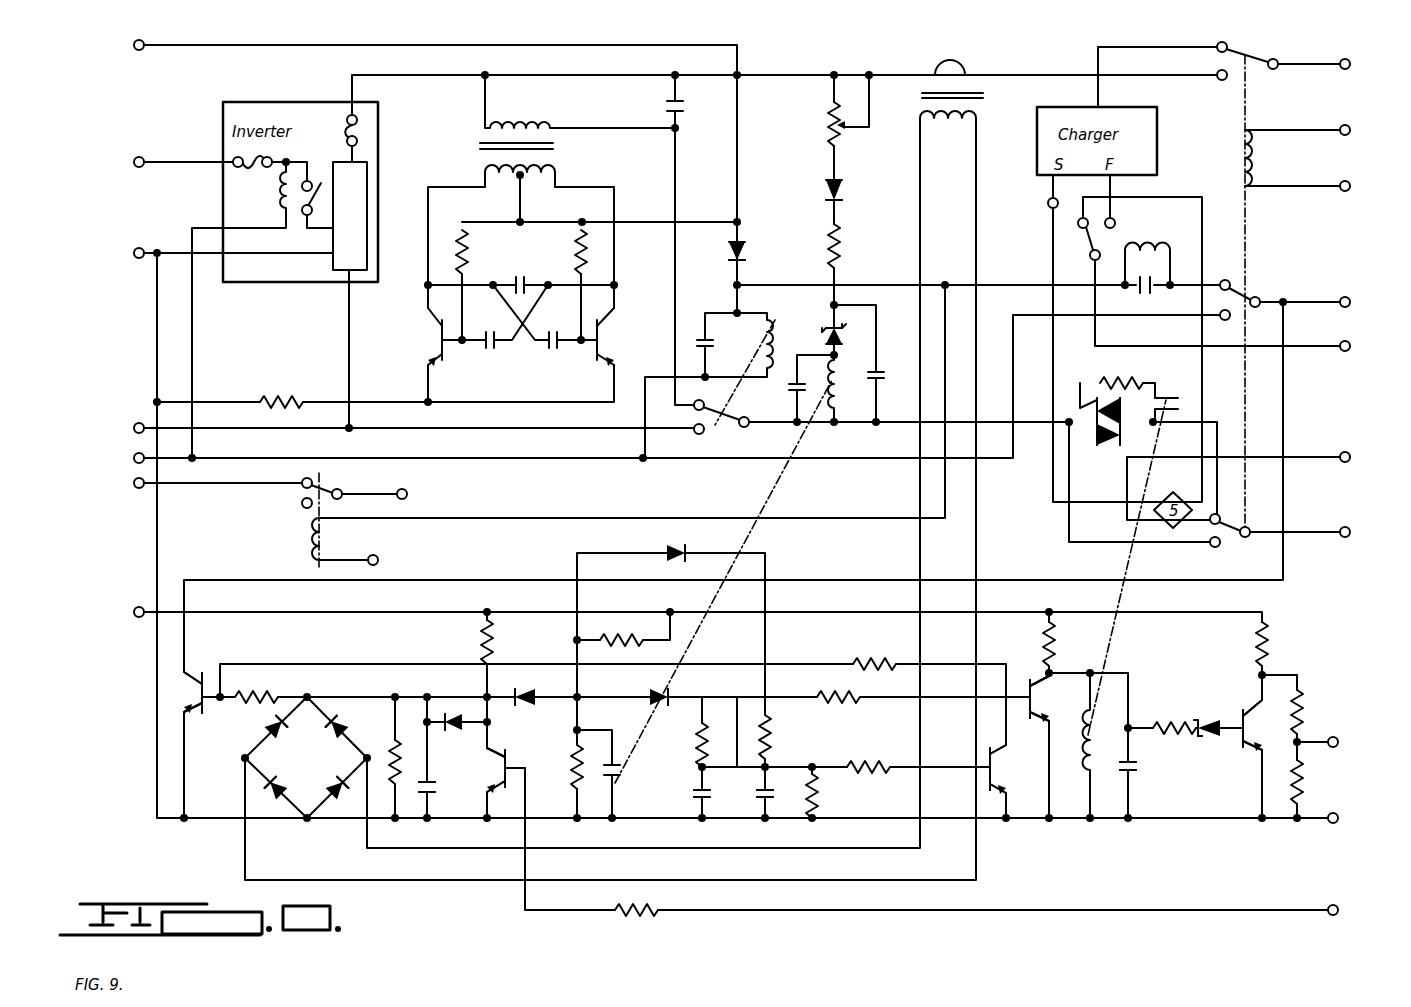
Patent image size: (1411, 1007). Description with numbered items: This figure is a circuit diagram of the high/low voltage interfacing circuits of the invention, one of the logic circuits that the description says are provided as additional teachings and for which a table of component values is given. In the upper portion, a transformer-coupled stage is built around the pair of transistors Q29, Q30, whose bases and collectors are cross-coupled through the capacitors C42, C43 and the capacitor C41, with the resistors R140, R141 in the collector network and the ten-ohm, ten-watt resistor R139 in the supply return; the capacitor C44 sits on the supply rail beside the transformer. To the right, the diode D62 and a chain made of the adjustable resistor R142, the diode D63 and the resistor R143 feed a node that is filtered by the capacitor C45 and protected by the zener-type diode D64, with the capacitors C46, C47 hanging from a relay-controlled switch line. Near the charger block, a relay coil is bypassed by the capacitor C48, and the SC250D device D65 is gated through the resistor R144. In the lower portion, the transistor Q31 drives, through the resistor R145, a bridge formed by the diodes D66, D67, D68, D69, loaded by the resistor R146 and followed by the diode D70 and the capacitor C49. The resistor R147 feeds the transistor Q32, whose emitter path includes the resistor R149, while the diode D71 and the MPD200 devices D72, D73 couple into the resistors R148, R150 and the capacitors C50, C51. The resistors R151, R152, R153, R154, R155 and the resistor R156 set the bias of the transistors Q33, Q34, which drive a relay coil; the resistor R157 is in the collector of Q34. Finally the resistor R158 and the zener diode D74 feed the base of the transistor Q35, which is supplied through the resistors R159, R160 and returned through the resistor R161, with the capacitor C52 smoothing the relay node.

The capacitor C44 is at (662, 108).
The resistor R140 is at (468, 254).
The resistor R141 is at (588, 252).
The capacitor C41 is at (522, 275).
The capacitor C42 is at (490, 352).
The capacitor C43 is at (556, 352).
The transistor Q29 is at (440, 338).
The transistor Q30 is at (601, 347).
The resistor R139 is at (283, 396).
The resistor R142 is at (830, 126).
The diode D63 is at (842, 191).
The resistor R143 is at (838, 256).
The diode D62 is at (746, 251).
The capacitor C45 is at (692, 328).
The diode D64 is at (818, 332).
The capacitor C46 is at (792, 398).
The capacitor C47 is at (872, 390).
The capacitor C48 is at (1150, 291).
The resistor R144 is at (1116, 382).
The diode D65 is at (1102, 448).
The diode D73 is at (664, 553).
The resistor R148 is at (622, 634).
The resistor R145 is at (260, 690).
The resistor R146 is at (400, 754).
The resistor R147 is at (491, 642).
The diode D66 is at (280, 730).
The diode D67 is at (344, 720).
The diode D68 is at (276, 802).
The diode D69 is at (330, 804).
The transistor Q31 is at (204, 704).
The diode D70 is at (452, 726).
The capacitor C49 is at (435, 796).
The diode D71 is at (524, 700).
The transistor Q32 is at (510, 766).
The resistor R149 is at (579, 792).
The diode D72 is at (656, 696).
The resistor R150 is at (704, 734).
The capacitor C50 is at (700, 794).
The capacitor C51 is at (762, 792).
The resistor R151 is at (768, 738).
The resistor R152 is at (834, 706).
The resistor R153 is at (876, 660).
The resistor R154 is at (862, 776).
The resistor R155 is at (814, 810).
The resistor R157 is at (1044, 644).
The transistor Q34 is at (1033, 696).
The transistor Q33 is at (999, 769).
The resistor R159 is at (1270, 642).
The resistor R158 is at (1166, 720).
The diode D74 is at (1208, 720).
The resistor R160 is at (1304, 712).
The transistor Q35 is at (1244, 748).
The resistor R161 is at (1302, 790).
The capacitor C52 is at (1134, 768).
The resistor R156 is at (650, 916).